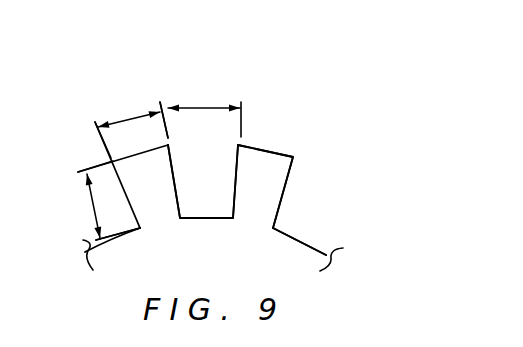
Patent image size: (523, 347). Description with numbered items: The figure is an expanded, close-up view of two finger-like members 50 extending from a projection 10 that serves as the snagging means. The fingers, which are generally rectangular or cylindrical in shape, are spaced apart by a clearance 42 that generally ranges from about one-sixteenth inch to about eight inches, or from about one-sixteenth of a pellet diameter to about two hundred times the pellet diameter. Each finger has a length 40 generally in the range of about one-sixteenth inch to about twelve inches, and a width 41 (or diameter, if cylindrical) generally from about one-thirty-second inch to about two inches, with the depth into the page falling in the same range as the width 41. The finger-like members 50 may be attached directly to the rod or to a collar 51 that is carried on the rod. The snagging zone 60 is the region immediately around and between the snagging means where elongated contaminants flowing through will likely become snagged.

The projection 10 is at (353, 207).
The length 40 is at (89, 210).
The width 41 is at (124, 122).
The clearance 42 is at (203, 108).
The finger-like member 50 is at (275, 152).
The collar 51 is at (300, 243).
The snagging zone 60 is at (215, 188).